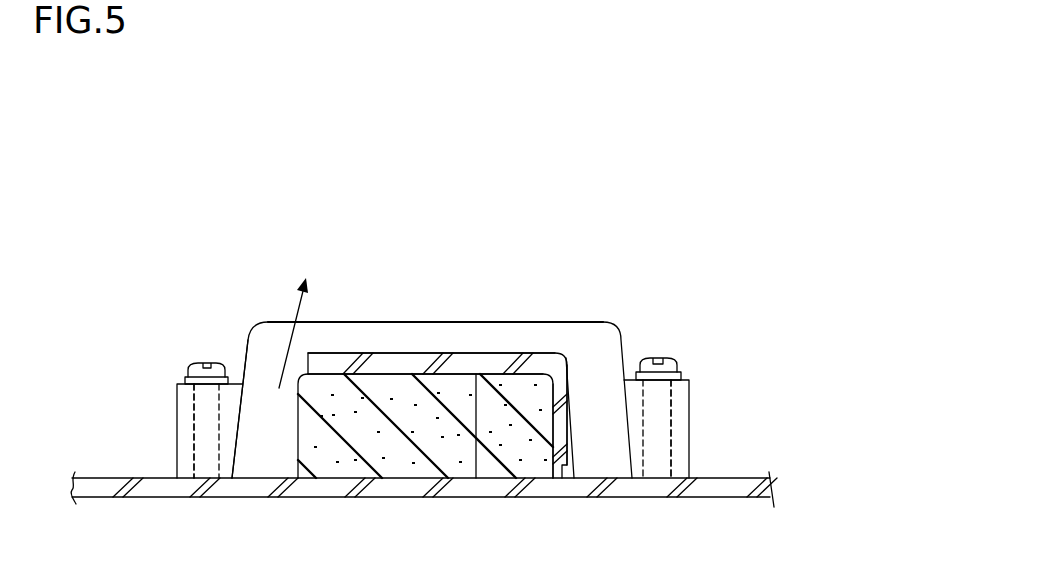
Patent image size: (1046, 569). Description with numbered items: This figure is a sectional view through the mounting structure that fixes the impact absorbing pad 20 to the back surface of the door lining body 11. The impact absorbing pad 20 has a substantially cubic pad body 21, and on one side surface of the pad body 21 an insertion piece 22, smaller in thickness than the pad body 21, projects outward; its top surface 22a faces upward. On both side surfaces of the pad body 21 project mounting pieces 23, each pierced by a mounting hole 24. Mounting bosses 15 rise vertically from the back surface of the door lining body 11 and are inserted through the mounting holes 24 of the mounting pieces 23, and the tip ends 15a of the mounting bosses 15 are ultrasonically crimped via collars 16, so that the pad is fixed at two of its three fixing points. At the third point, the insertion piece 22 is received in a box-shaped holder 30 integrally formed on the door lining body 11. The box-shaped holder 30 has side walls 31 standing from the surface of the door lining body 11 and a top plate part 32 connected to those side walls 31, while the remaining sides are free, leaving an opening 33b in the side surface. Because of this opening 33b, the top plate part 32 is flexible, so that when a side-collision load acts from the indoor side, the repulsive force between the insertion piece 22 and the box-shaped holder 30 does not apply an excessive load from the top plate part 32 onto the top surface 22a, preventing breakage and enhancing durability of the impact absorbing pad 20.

The door lining body 11 is at (267, 488).
The mounting boss 15 is at (205, 440).
The tip end of mounting boss 15a is at (197, 363).
The collar 16 is at (185, 377).
The impact absorbing pad 20 is at (560, 308).
The pad body 21 is at (393, 330).
The insertion piece 22 is at (430, 443).
The top surface of insertion piece 22a is at (481, 440).
The mounting piece 23 is at (235, 400).
The mounting hole 24 is at (192, 423).
The box-shaped holder 30 is at (573, 344).
The side wall 31 is at (568, 418).
The top plate part 32 is at (422, 358).
The opening 33b is at (293, 424).